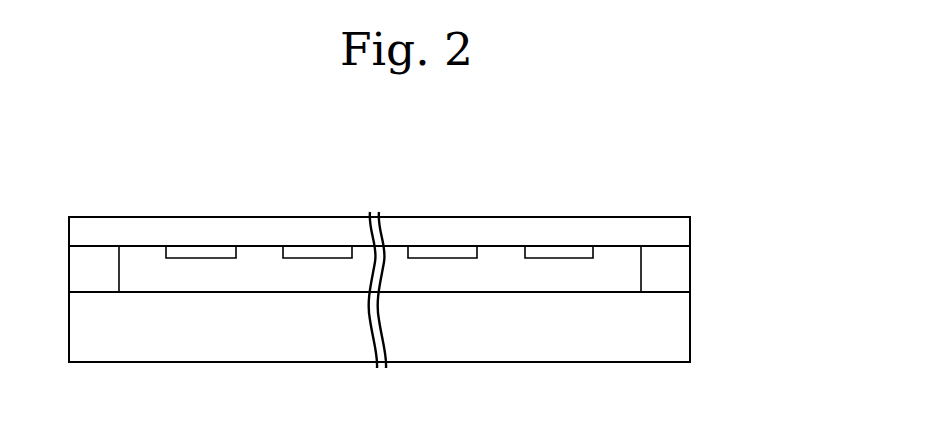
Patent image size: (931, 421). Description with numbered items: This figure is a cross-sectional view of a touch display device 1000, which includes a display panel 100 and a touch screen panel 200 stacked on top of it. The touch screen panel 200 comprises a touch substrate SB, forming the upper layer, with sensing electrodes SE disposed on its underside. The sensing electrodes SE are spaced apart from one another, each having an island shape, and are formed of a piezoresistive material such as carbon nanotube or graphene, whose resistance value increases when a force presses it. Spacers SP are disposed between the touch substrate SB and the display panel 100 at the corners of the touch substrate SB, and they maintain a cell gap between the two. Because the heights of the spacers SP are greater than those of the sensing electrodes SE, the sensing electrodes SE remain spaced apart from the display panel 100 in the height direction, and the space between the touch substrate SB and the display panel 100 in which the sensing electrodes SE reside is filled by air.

The touch display device 1000 is at (727, 145).
The display panel 100 is at (682, 327).
The touch screen panel 200 is at (435, 255).
The touch substrate SB is at (682, 232).
The sensing electrodes SE is at (593, 249).
The spacers SP is at (682, 268).